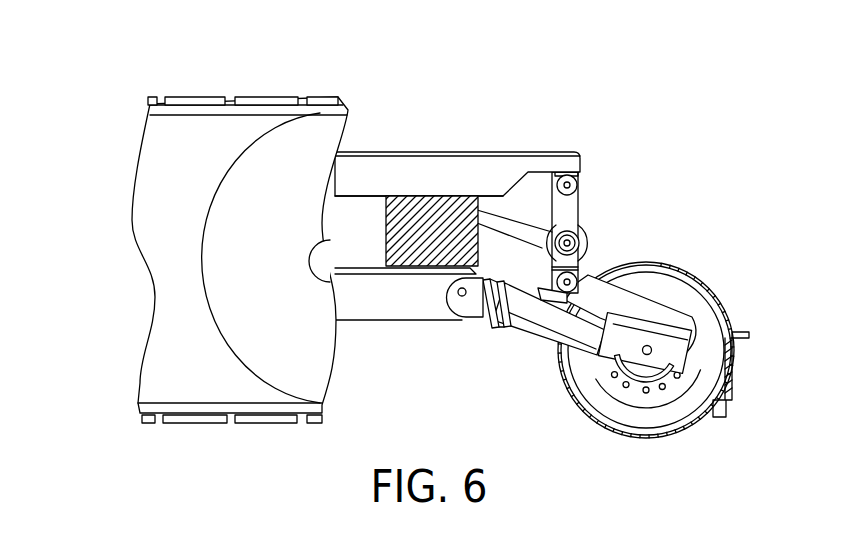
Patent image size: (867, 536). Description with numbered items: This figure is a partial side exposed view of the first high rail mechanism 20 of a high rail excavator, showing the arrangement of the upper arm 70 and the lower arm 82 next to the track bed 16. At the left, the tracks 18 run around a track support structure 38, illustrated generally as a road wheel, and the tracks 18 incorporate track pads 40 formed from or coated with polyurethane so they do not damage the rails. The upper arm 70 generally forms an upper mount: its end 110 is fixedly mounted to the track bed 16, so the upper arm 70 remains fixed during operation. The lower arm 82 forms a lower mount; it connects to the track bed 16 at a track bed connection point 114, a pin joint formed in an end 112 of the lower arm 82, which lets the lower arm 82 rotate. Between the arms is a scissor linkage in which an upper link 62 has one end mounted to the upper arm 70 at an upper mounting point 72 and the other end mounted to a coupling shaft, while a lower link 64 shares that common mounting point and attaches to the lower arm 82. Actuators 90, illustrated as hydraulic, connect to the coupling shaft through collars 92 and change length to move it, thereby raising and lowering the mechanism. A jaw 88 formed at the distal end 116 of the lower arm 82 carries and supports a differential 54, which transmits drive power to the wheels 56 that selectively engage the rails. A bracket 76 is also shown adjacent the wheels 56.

The track bed 16 is at (405, 218).
The tracks 18 is at (345, 110).
The first high rail mechanism 20 is at (710, 201).
The track support structure 38 is at (330, 373).
The track pads 40 is at (313, 97).
The differential 54 is at (636, 354).
The wheels 56 is at (683, 412).
The upper link 62 is at (573, 205).
The lower link 64 is at (572, 262).
The upper arm 70 is at (468, 170).
The upper mounting point 72 is at (578, 188).
The scraper bracket 76 is at (740, 332).
The lower arm 82 is at (522, 315).
The jaw 88 is at (635, 305).
The actuators 90 is at (518, 227).
The collars 92 is at (587, 240).
The end of upper arm 110 is at (352, 190).
The end of lower arm 112 is at (500, 310).
The track bed connection point 114 is at (458, 298).
The distal end of lower arm 116 is at (598, 365).